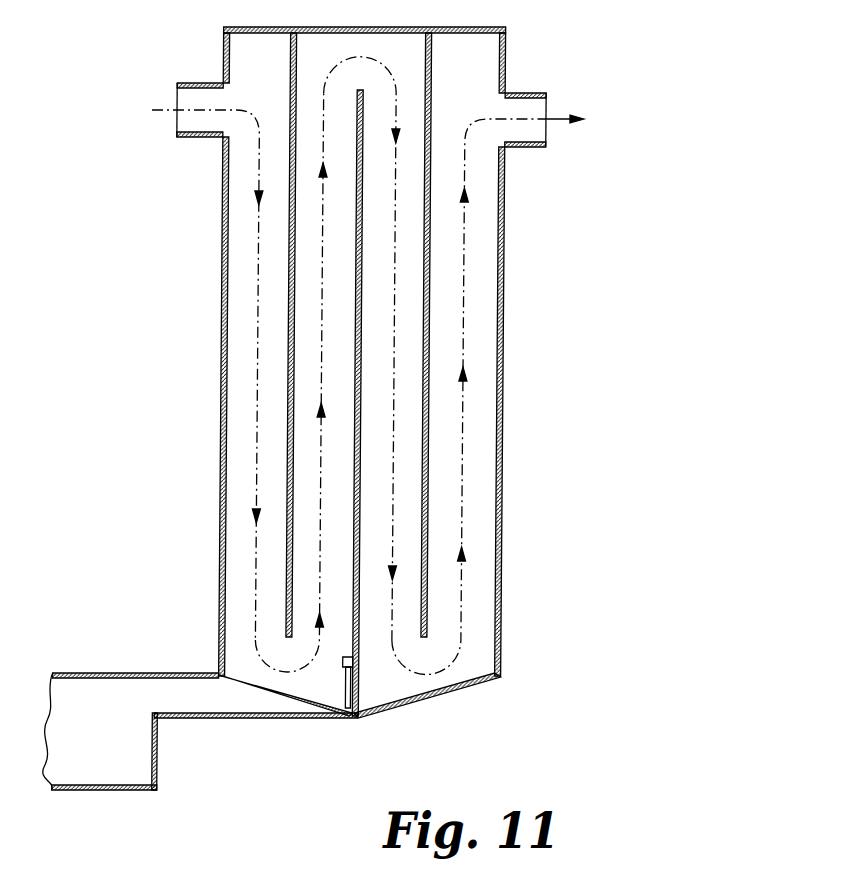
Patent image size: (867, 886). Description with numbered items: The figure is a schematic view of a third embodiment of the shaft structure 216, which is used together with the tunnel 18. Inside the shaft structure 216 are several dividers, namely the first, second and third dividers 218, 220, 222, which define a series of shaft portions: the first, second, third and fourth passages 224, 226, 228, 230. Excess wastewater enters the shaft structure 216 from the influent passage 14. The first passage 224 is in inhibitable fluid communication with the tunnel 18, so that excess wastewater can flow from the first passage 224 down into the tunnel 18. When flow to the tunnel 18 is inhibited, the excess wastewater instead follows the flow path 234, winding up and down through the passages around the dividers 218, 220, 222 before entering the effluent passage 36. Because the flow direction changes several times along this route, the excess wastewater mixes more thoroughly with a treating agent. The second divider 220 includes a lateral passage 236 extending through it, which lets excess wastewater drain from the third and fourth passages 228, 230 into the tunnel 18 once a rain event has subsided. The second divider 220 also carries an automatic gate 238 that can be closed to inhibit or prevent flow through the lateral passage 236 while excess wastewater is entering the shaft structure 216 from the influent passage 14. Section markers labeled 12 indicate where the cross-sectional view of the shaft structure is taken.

The section line for FIG. 12 is at (210, 293).
The influent passage 14 is at (202, 83).
The effluent passage 36 is at (527, 93).
The tunnel 18 is at (118, 790).
The shaft structure 216 is at (220, 452).
The first divider 218 is at (287, 503).
The second divider 220 is at (355, 640).
The third divider 222 is at (429, 503).
The first passage 224 is at (243, 203).
The second passage 226 is at (307, 273).
The third passage 228 is at (412, 267).
The fourth passage 230 is at (483, 208).
The flow path 234 is at (463, 440).
The lateral passage 236 is at (356, 700).
The automatic gate 238 is at (346, 690).